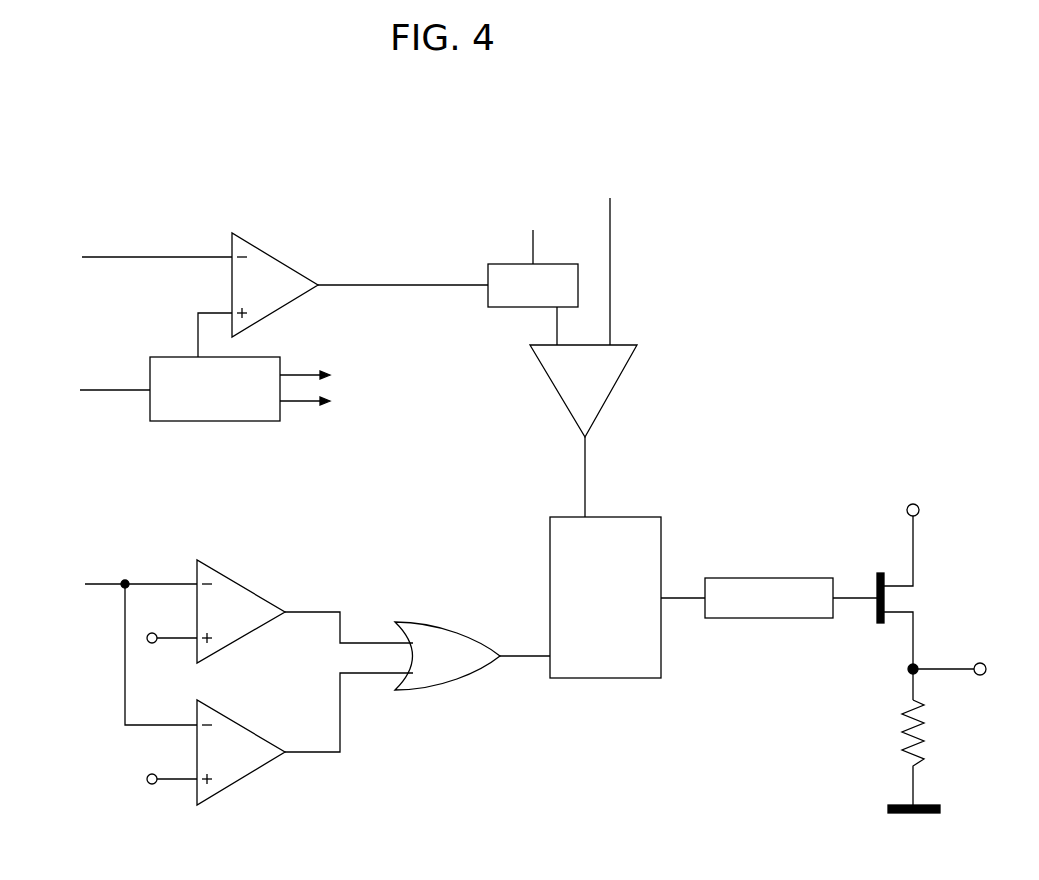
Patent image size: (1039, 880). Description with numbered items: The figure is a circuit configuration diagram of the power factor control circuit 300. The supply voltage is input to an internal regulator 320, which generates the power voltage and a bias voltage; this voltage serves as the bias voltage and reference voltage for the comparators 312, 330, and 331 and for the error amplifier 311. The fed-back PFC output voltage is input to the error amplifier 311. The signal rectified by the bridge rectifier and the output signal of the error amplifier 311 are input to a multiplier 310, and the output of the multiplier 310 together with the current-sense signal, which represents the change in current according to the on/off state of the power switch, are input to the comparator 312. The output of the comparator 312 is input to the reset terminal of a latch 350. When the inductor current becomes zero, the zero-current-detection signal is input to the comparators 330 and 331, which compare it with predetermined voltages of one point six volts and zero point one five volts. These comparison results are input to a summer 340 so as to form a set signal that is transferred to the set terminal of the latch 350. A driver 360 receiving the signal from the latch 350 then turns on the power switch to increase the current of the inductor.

The power factor control circuit 300 is at (785, 158).
The multiplier 310 is at (505, 262).
The error amplifier 311 is at (278, 255).
The comparator 312 is at (557, 392).
The internal regulator 320 is at (273, 357).
The comparator 330 is at (245, 582).
The comparator 331 is at (245, 780).
The summer 340 is at (443, 622).
The latch 350 is at (637, 517).
The driver 360 is at (768, 578).